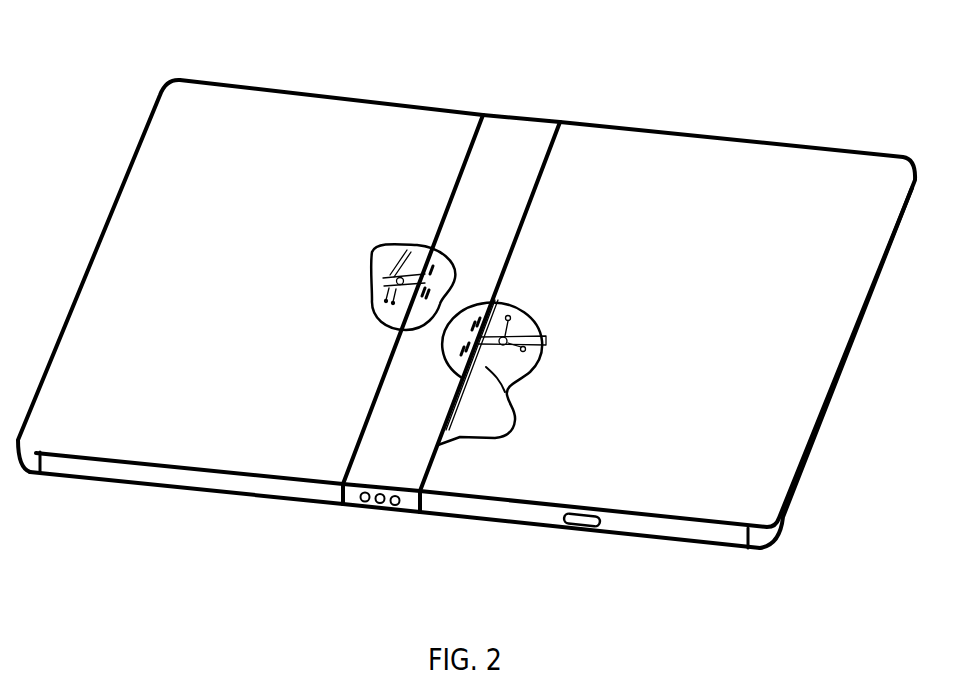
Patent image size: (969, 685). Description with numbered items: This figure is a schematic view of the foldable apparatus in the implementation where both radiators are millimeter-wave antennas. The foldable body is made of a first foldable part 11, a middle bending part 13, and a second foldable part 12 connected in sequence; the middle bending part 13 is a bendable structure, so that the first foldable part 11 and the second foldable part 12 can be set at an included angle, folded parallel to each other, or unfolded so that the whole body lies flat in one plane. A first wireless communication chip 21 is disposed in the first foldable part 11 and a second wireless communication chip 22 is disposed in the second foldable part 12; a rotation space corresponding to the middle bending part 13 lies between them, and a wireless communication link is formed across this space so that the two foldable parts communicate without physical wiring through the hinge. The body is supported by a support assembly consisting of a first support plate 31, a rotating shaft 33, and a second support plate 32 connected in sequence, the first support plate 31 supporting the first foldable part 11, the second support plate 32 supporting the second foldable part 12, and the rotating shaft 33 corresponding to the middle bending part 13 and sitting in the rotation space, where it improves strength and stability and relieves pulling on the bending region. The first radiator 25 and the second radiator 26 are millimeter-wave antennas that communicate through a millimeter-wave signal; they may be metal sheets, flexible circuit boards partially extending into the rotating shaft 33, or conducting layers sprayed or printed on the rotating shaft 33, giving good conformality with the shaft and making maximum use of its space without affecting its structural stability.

The first foldable part 11 is at (347, 123).
The second foldable part 12 is at (708, 167).
The middle bending part 13 is at (513, 138).
The first wireless communication chip 21 is at (393, 290).
The second wireless communication chip 22 is at (520, 337).
The first radiator 25 is at (413, 330).
The second radiator 26 is at (478, 310).
The first support plate 31 is at (220, 483).
The second support plate 32 is at (547, 507).
The rotating shaft 33 is at (372, 513).